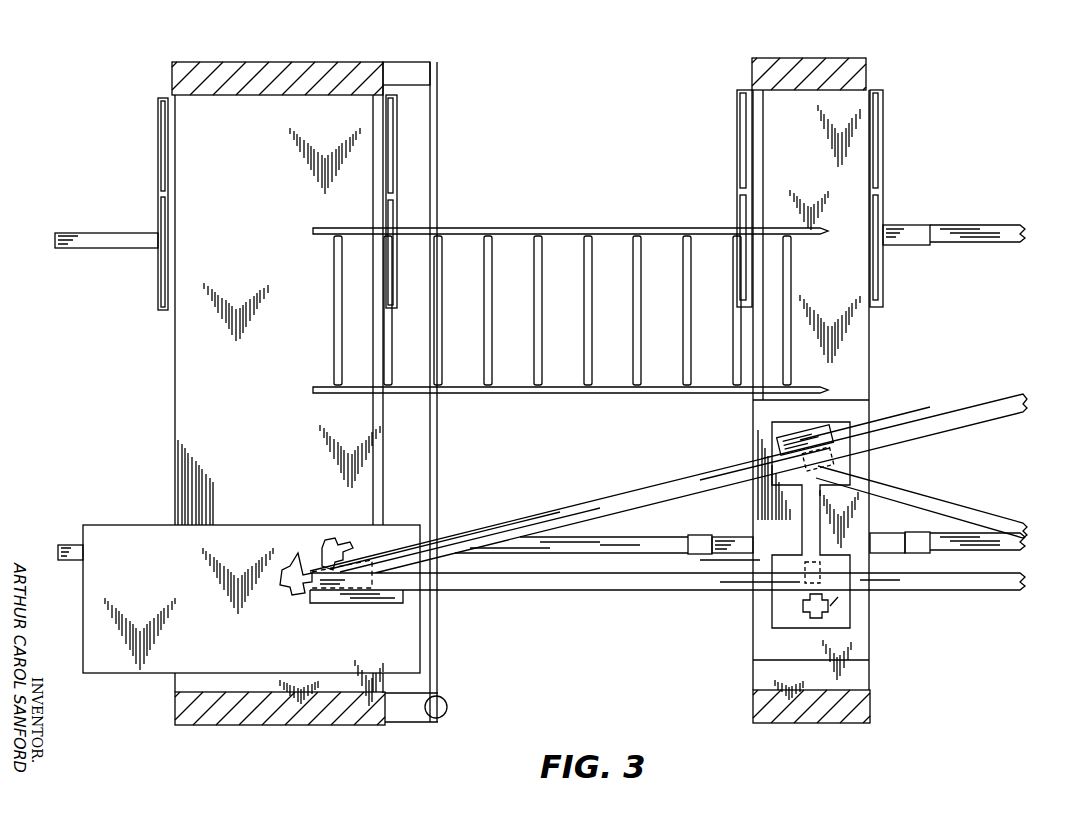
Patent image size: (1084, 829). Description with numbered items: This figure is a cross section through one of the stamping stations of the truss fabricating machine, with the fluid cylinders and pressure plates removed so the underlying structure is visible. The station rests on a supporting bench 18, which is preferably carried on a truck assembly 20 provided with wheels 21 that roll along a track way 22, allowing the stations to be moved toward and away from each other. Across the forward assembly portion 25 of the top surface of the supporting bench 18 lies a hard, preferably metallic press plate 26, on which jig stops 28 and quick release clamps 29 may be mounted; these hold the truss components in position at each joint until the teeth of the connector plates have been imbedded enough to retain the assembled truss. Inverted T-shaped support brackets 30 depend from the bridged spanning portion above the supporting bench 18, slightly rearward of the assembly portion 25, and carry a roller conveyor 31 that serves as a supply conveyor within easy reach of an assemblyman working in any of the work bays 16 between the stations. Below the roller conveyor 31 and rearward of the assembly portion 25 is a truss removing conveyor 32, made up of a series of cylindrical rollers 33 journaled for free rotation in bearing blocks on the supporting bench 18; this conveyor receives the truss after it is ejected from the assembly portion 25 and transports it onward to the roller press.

The work bays 16 is at (668, 392).
The supporting bench 18 is at (182, 432).
The truck assembly 20 is at (911, 225).
The wheels 21 is at (698, 537).
The track way 22 is at (970, 229).
The assembly portion 25 is at (356, 507).
The press plate 26 is at (878, 630).
The jig stops 28 is at (346, 605).
The quick release clamps 29 is at (336, 542).
The inverted T-shaped support brackets 30 is at (378, 284).
The roller conveyor 31 is at (613, 220).
The truss removing conveyor 32 is at (404, 162).
The cylindrical rollers 33 is at (168, 148).